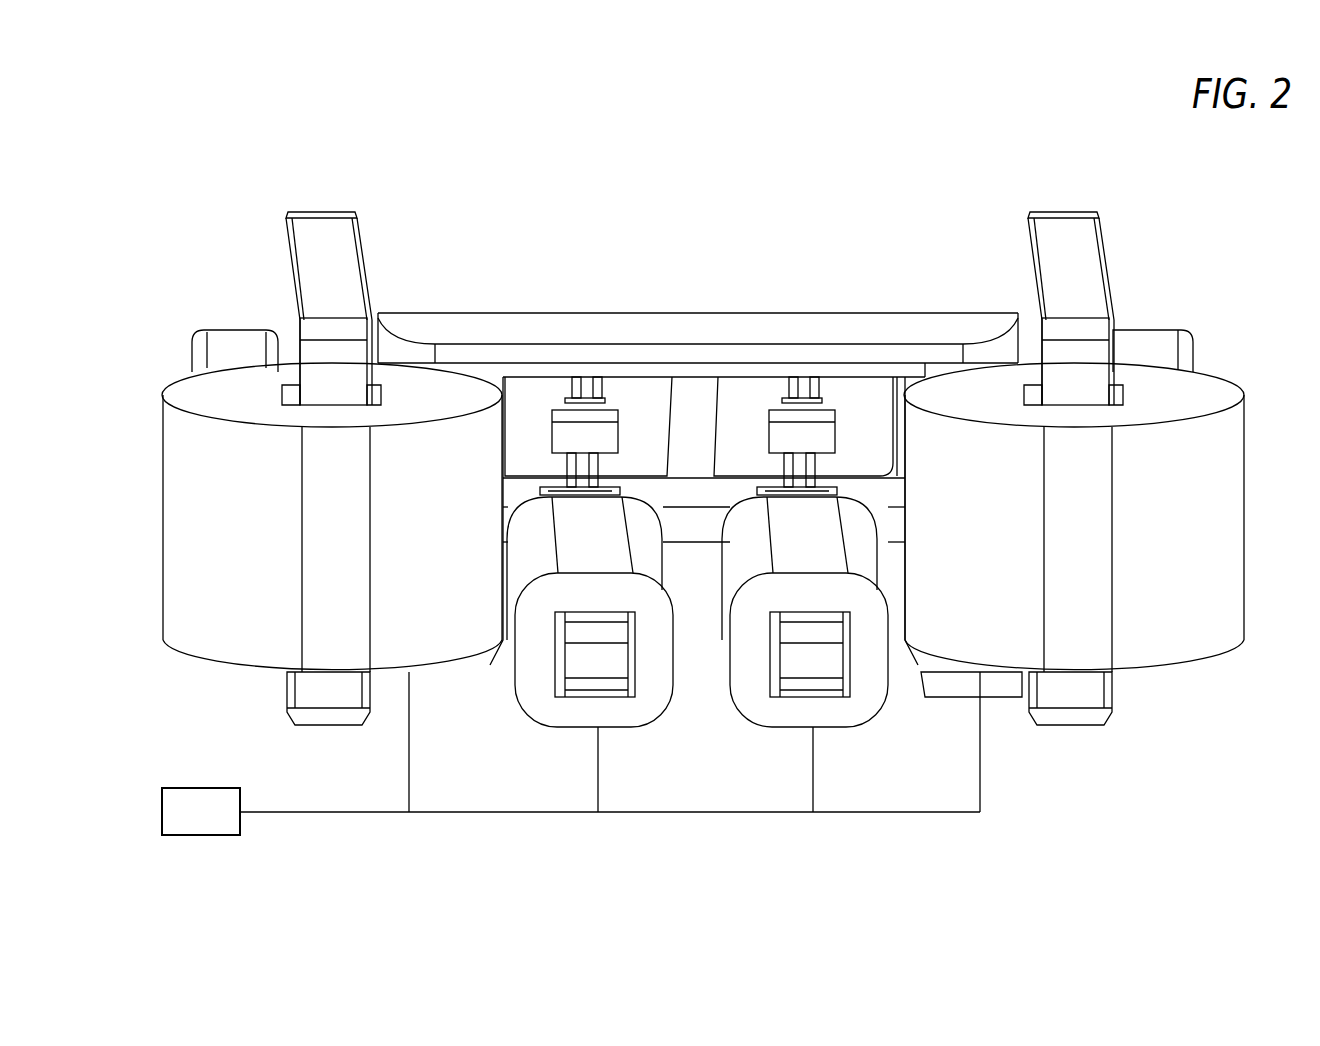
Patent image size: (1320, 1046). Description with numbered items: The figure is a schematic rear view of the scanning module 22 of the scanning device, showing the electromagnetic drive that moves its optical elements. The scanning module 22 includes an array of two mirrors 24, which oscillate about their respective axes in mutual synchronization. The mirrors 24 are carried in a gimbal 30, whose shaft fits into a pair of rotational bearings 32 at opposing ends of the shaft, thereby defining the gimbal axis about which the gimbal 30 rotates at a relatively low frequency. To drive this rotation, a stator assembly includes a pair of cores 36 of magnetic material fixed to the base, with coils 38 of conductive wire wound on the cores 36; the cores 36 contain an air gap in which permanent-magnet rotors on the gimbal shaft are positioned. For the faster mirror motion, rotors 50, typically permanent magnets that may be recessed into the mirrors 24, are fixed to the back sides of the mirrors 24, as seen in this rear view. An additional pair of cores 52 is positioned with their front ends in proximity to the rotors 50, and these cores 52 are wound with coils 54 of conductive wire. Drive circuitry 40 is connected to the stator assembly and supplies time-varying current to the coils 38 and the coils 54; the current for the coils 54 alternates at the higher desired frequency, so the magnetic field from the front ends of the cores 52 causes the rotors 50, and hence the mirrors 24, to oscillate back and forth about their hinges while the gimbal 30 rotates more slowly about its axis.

The scanning module 22 is at (233, 113).
The mirrors 24 is at (528, 385).
The gimbal 30 is at (612, 313).
The rotational bearings 32 is at (238, 332).
The cores 36 is at (318, 214).
The coils 38 is at (170, 462).
The drive circuitry 40 is at (206, 788).
The rotors 50 is at (770, 440).
The cores 52 is at (612, 490).
The coils 54 is at (757, 715).